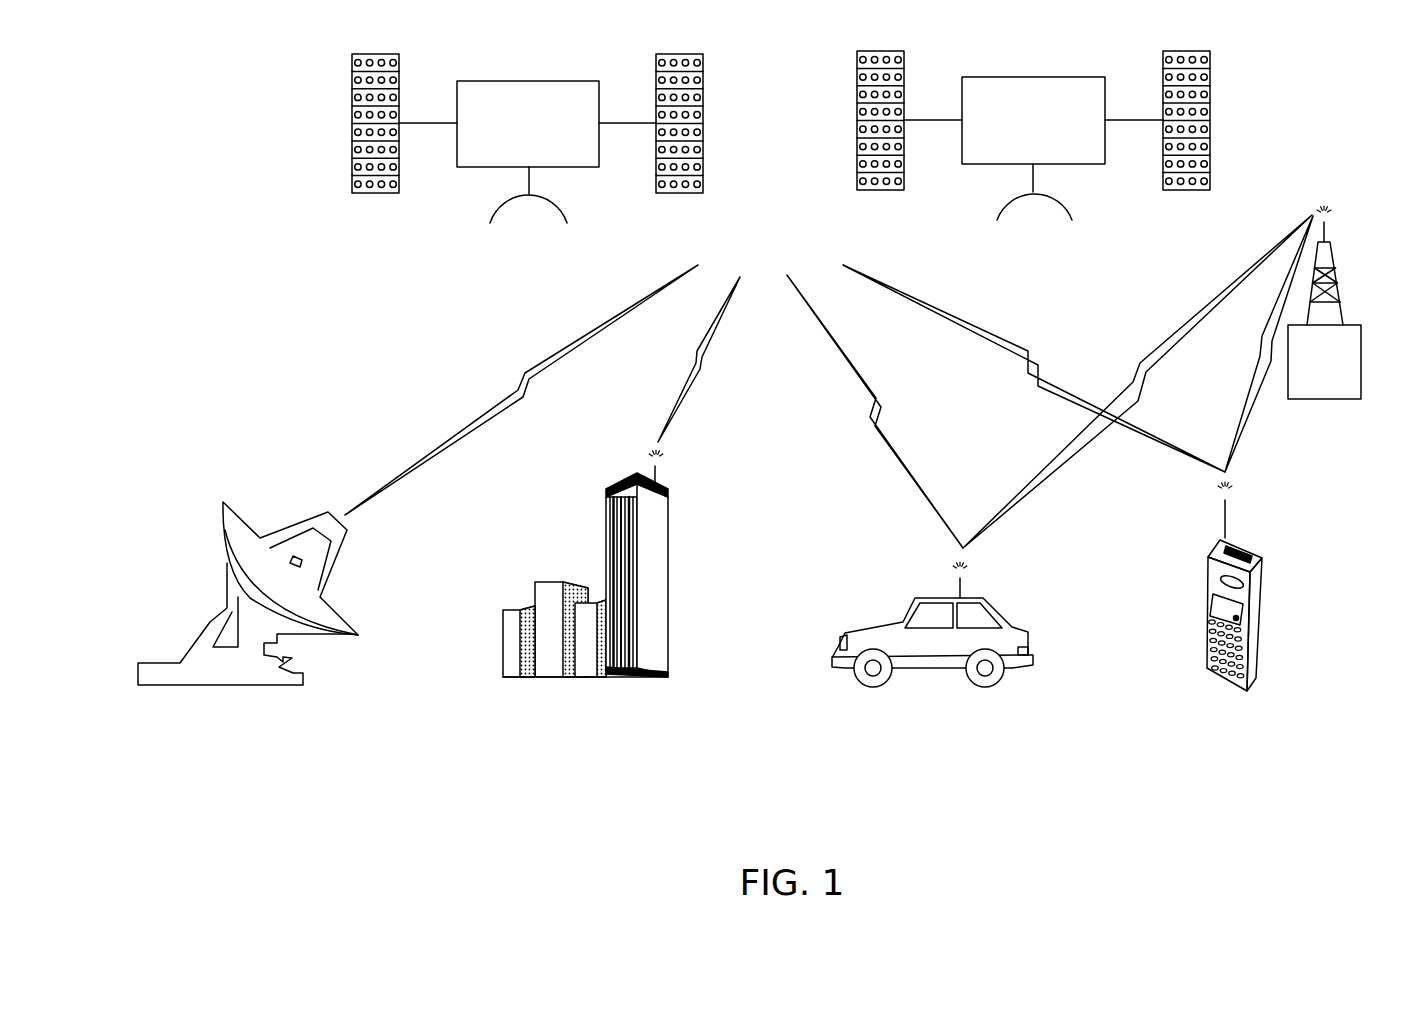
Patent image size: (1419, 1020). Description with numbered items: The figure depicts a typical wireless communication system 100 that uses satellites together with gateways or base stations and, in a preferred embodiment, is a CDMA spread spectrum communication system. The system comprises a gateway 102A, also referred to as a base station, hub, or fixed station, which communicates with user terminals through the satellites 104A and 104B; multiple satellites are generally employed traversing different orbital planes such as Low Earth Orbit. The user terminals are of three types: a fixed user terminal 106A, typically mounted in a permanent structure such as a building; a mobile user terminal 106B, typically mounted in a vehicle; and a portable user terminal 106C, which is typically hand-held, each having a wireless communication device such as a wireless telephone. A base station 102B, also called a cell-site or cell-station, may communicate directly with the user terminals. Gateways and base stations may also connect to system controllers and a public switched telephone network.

The wireless communication system 100 is at (1402, 87).
The gateway 102A is at (248, 623).
The base station 102B is at (1324, 302).
The satellite 104A is at (527, 138).
The satellite 104B is at (1033, 135).
The fixed user terminal 106A is at (646, 673).
The mobile user terminal 106B is at (948, 673).
The portable user terminal 106C is at (1218, 680).